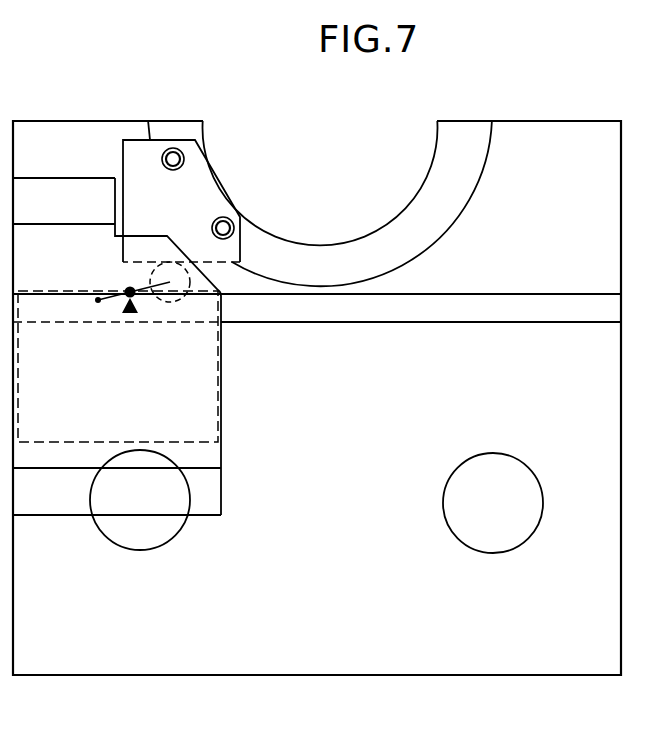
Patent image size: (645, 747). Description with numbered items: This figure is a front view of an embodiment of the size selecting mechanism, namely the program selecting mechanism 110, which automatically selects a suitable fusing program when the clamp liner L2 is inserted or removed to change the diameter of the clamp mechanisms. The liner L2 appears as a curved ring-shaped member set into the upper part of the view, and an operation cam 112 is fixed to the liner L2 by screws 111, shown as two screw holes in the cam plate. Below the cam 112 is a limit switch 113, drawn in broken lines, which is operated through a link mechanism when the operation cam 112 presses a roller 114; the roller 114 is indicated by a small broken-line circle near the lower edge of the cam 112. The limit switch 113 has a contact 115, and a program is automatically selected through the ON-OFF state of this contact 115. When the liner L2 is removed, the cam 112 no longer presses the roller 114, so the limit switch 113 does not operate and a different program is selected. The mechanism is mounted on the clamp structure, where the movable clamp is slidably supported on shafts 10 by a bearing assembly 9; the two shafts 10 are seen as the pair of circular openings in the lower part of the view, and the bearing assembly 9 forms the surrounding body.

The program selecting mechanism 110 is at (70, 112).
The bearing assembly 9 is at (308, 650).
The clamp liner L2 is at (428, 232).
The operation cam 112 is at (140, 148).
The screws 111 is at (185, 158).
The roller 114 is at (213, 297).
The contact 115 is at (138, 316).
The limit switch 113 is at (218, 423).
The shafts 10 is at (148, 535).